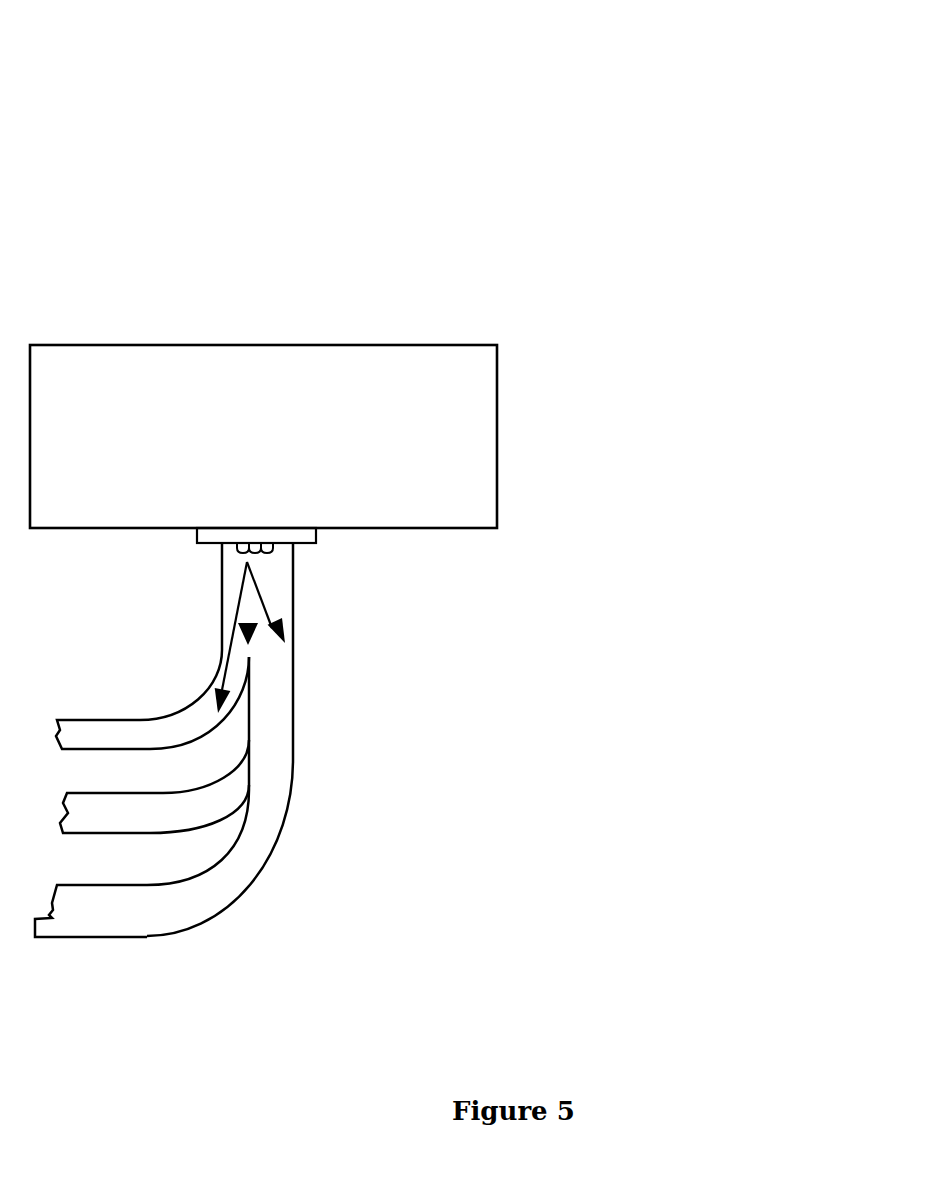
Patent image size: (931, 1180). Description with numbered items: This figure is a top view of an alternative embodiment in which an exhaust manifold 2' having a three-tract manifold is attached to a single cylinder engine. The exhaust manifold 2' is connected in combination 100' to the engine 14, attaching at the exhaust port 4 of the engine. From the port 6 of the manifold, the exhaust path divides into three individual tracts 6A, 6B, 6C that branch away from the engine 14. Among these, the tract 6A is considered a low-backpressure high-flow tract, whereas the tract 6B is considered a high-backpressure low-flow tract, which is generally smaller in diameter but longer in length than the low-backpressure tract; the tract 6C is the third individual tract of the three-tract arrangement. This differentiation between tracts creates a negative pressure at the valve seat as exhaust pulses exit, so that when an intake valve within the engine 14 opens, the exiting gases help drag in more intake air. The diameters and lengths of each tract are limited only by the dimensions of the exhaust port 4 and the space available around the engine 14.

The combination 100' is at (432, 274).
The internal combustion engine 14 is at (275, 325).
The exhaust port 4 is at (282, 500).
The port 6 is at (240, 507).
The exhaust manifold 2' is at (336, 740).
The low-backpressure high-flow tract 6A is at (297, 857).
The high-backpressure low-flow tract 6B is at (78, 858).
The individual tract 6C is at (172, 695).